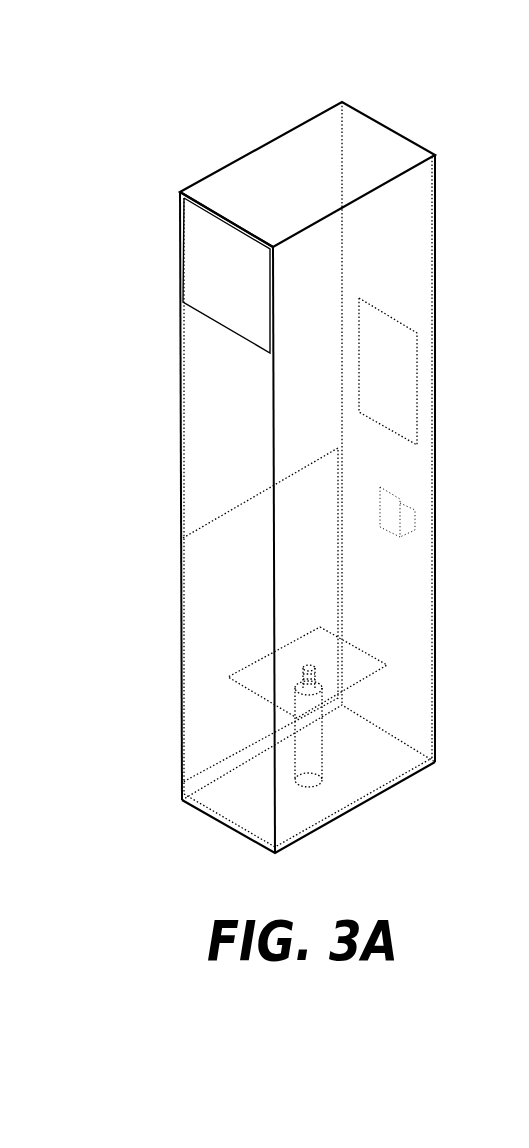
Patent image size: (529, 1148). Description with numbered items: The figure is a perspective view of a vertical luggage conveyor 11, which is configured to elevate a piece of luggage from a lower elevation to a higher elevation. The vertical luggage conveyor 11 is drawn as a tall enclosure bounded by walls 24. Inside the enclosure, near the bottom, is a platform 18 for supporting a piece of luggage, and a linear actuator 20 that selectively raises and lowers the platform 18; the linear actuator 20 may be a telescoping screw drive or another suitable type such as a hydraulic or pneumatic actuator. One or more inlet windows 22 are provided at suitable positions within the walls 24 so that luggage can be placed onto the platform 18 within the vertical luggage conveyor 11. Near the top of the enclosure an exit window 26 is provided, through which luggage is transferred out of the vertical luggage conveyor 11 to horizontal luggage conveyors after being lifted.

The vertical luggage conveyor 11 is at (67, 375).
The platform 18 is at (250, 677).
The linear actuator 20 is at (312, 752).
The inlet window 22 is at (393, 315).
The walls 24 is at (403, 240).
The exit window 26 is at (219, 325).